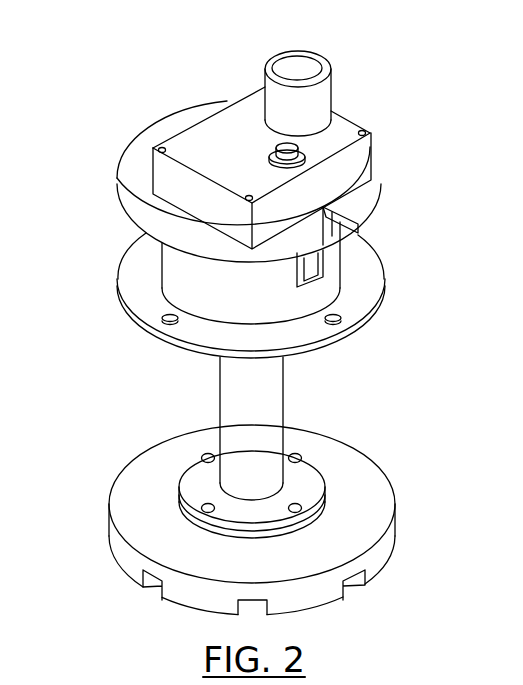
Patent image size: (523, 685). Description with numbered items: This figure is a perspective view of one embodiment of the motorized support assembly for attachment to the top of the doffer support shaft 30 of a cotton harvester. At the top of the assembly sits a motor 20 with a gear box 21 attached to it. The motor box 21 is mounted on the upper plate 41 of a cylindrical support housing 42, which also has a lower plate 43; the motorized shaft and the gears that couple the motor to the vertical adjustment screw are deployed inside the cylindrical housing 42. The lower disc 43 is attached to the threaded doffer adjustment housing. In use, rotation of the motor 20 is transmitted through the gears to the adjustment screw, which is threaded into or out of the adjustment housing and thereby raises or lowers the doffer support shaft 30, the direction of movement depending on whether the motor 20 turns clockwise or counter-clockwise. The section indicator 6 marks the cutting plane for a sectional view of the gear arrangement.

The motor 20 is at (313, 107).
The gear box 21 is at (345, 172).
The doffer support shaft 30 is at (258, 417).
The upper plate 41 is at (142, 203).
The cylindrical support housing 42 is at (203, 286).
The lower plate 43 is at (155, 297).
The section line 6- 6 is at (130, 132).